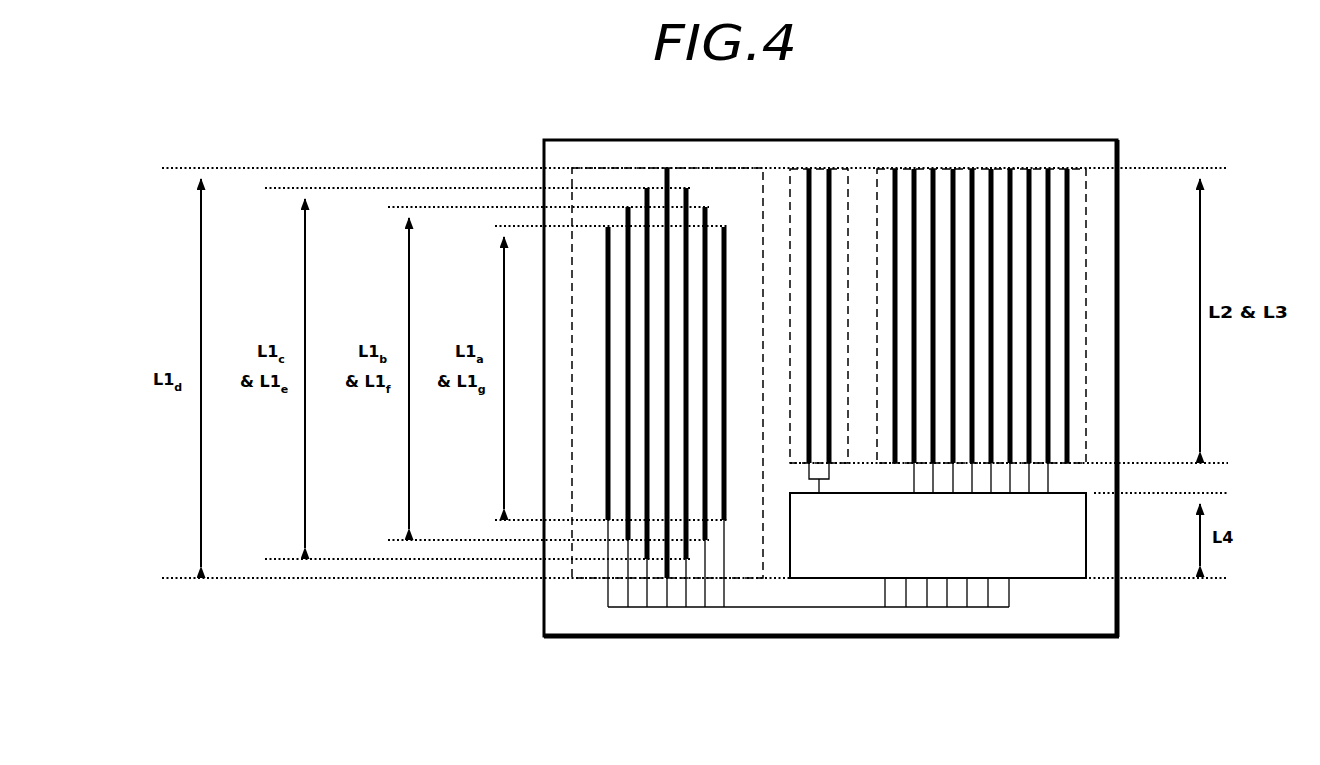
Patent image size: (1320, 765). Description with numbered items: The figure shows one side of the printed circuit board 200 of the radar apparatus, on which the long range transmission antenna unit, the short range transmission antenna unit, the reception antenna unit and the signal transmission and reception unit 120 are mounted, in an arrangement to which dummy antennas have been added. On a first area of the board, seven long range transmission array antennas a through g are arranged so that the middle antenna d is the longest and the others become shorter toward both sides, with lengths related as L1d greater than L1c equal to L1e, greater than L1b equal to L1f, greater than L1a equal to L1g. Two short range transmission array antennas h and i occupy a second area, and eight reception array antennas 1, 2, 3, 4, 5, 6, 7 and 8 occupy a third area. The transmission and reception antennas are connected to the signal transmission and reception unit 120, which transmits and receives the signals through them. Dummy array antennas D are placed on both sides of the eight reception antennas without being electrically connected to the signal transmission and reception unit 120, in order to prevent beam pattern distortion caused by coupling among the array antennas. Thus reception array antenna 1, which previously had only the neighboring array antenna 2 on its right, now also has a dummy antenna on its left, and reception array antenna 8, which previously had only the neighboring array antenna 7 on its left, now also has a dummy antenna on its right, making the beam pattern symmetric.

The printed circuit board 200 is at (831, 362).
The signal transmission and reception unit 120 is at (938, 535).
The reception array antenna 1 is at (914, 319).
The reception array antenna 2 is at (933, 319).
The reception array antenna 3 is at (953, 319).
The reception array antenna 4 is at (972, 319).
The reception array antenna 5 is at (991, 319).
The reception array antenna 6 is at (1010, 319).
The reception array antenna 7 is at (1029, 319).
The reception array antenna 8 is at (1048, 319).